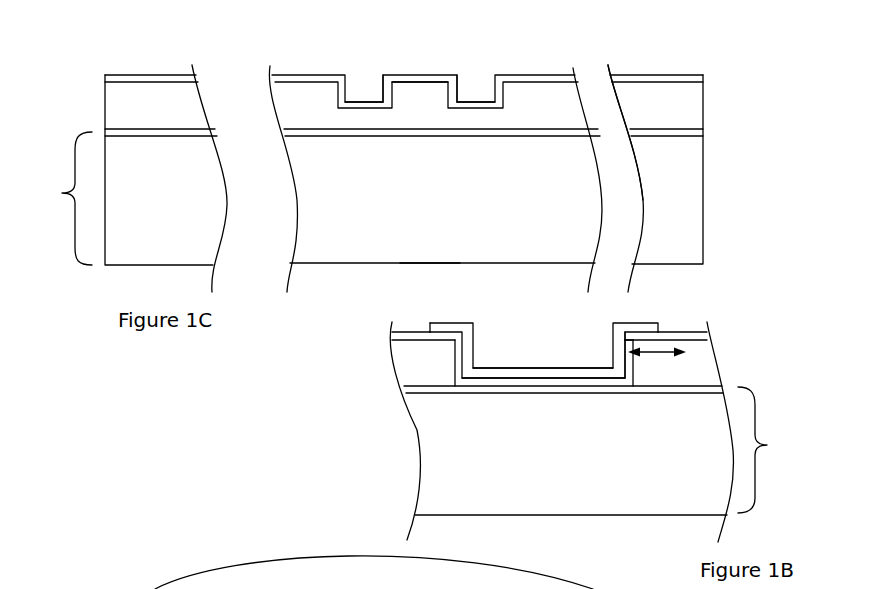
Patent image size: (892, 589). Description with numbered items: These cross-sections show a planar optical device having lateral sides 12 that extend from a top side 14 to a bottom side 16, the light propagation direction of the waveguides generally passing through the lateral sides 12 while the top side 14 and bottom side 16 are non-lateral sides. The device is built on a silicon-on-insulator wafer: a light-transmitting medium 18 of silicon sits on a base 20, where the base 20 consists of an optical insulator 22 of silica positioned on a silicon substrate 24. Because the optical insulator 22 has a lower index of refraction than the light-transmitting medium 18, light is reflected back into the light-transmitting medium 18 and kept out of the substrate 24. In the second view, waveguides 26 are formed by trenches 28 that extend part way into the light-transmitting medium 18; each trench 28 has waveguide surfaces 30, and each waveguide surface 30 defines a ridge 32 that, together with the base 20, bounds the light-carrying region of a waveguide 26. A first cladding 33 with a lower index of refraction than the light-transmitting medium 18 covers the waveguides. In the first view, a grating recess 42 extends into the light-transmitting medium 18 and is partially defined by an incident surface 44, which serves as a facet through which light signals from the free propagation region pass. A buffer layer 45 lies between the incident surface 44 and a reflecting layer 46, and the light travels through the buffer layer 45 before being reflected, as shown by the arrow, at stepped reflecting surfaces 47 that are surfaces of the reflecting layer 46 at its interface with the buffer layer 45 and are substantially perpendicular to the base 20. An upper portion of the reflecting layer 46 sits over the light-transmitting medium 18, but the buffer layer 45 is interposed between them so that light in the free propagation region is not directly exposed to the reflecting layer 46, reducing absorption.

In FIG. 1C, the lateral sides 12 is at (724, 190).
In FIG. 1C, the top side 14 is at (647, 56).
In FIG. 1C, the bottom side 16 is at (436, 284).
In FIG. 1C, the light-transmitting medium 18 is at (288, 105).
In FIG. 1B, the light-transmitting medium 18 is at (408, 362).
In FIG. 1C, the base 20 is at (130, 178).
In FIG. 1B, the base 20 is at (768, 450).
In FIG. 1C, the optical insulator 22 is at (290, 132).
In FIG. 1B, the optical insulator 22 is at (408, 387).
In FIG. 1C, the substrate 24 is at (297, 210).
In FIG. 1B, the substrate 24 is at (437, 460).
In FIG. 1C, the waveguide 26 is at (390, 62).
In FIG. 1C, the trench 28 is at (369, 107).
In FIG. 1C, the waveguide surface 30 is at (392, 92).
In FIG. 1C, the ridge 32 is at (428, 80).
In FIG. 1C, the first cladding 33 is at (150, 75).
In FIG. 1B, the first cladding 33 is at (418, 336).
In FIG. 1B, the grating recess 42 is at (455, 357).
In FIG. 1B, the incident surface 44 is at (633, 377).
In FIG. 1B, the buffer layer 45 is at (478, 378).
In FIG. 1B, the reflecting layer 46 is at (510, 372).
In FIG. 1B, the reflecting surfaces 47 is at (618, 370).